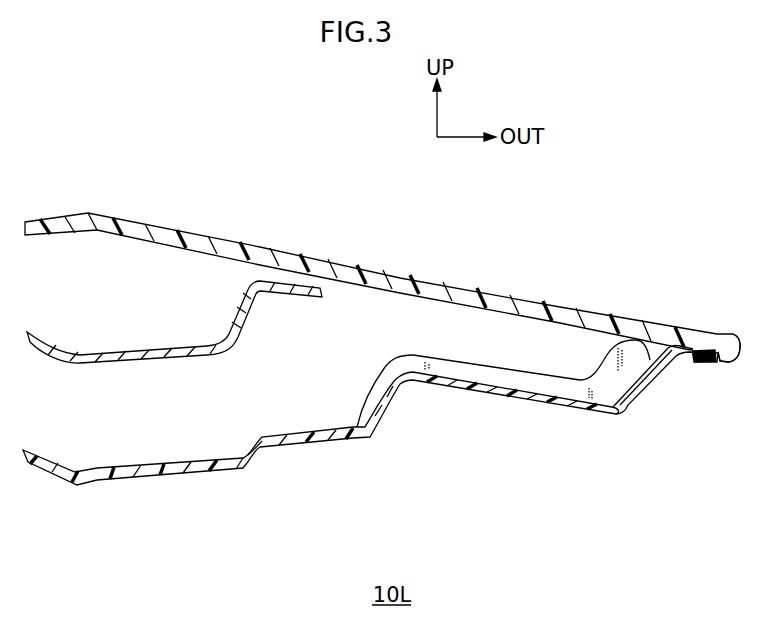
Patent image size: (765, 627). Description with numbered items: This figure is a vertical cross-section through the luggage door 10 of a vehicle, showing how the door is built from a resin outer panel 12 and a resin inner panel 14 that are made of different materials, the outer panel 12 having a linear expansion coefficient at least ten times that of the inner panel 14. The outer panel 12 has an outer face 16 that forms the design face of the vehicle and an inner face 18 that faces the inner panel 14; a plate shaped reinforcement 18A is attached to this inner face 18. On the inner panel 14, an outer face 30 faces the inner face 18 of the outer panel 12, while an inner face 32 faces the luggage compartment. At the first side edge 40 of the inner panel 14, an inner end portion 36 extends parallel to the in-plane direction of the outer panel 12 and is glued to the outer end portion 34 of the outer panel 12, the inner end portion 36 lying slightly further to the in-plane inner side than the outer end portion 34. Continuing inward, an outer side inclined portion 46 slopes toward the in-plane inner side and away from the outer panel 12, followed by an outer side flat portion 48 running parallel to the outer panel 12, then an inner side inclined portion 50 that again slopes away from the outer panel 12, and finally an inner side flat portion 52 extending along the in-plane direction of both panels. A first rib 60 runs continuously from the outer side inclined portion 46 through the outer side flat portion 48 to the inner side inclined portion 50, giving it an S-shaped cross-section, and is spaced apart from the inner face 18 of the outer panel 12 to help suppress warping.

The luggage door 10 is at (78, 181).
The outer panel 12 is at (429, 281).
The inner panel 14 is at (240, 469).
The outer face 16 is at (116, 215).
The inner face 18 is at (105, 233).
The reinforcement 18A is at (210, 346).
The outer face 30 is at (150, 460).
The inner face 32 is at (143, 482).
The outer end portion 34 is at (717, 333).
The inner end portion 36 is at (703, 364).
The first side edge 40 is at (593, 409).
The outer side inclined portion 46 is at (648, 389).
The outer side flat portion 48 is at (497, 406).
The inner side inclined portion 50 is at (395, 400).
The inner side flat portion 52 is at (318, 443).
The first rib 60 is at (530, 380).